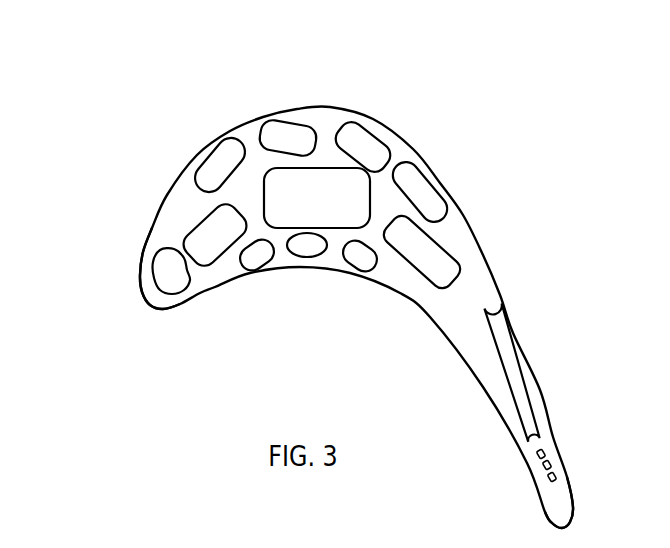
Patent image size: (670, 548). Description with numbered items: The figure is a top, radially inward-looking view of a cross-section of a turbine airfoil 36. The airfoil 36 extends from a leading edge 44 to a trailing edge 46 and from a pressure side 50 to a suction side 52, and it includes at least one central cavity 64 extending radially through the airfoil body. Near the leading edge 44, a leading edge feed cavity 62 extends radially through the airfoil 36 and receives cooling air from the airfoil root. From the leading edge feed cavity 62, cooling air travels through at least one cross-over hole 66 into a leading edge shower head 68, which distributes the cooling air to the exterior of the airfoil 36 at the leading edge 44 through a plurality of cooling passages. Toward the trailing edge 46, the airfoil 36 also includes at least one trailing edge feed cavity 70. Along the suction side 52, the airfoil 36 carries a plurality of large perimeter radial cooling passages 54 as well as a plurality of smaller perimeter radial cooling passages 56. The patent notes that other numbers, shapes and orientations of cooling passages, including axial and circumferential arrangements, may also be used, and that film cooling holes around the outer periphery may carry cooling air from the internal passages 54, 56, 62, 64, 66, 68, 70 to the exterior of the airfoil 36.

The airfoil 36 is at (104, 61).
The leading edge 44 is at (142, 290).
The trailing edge 46 is at (573, 510).
The pressure side 50 is at (373, 267).
The suction side 52 is at (433, 160).
The large perimeter radial cooling passages 54 is at (393, 130).
The smaller perimeter radial cooling passages 56 is at (268, 265).
The leading edge feed cavity 62 is at (208, 270).
The central cavity 64 is at (264, 160).
The cross-over hole 66 is at (177, 260).
The leading edge shower head 68 is at (165, 265).
The trailing edge feed cavity 70 is at (520, 360).